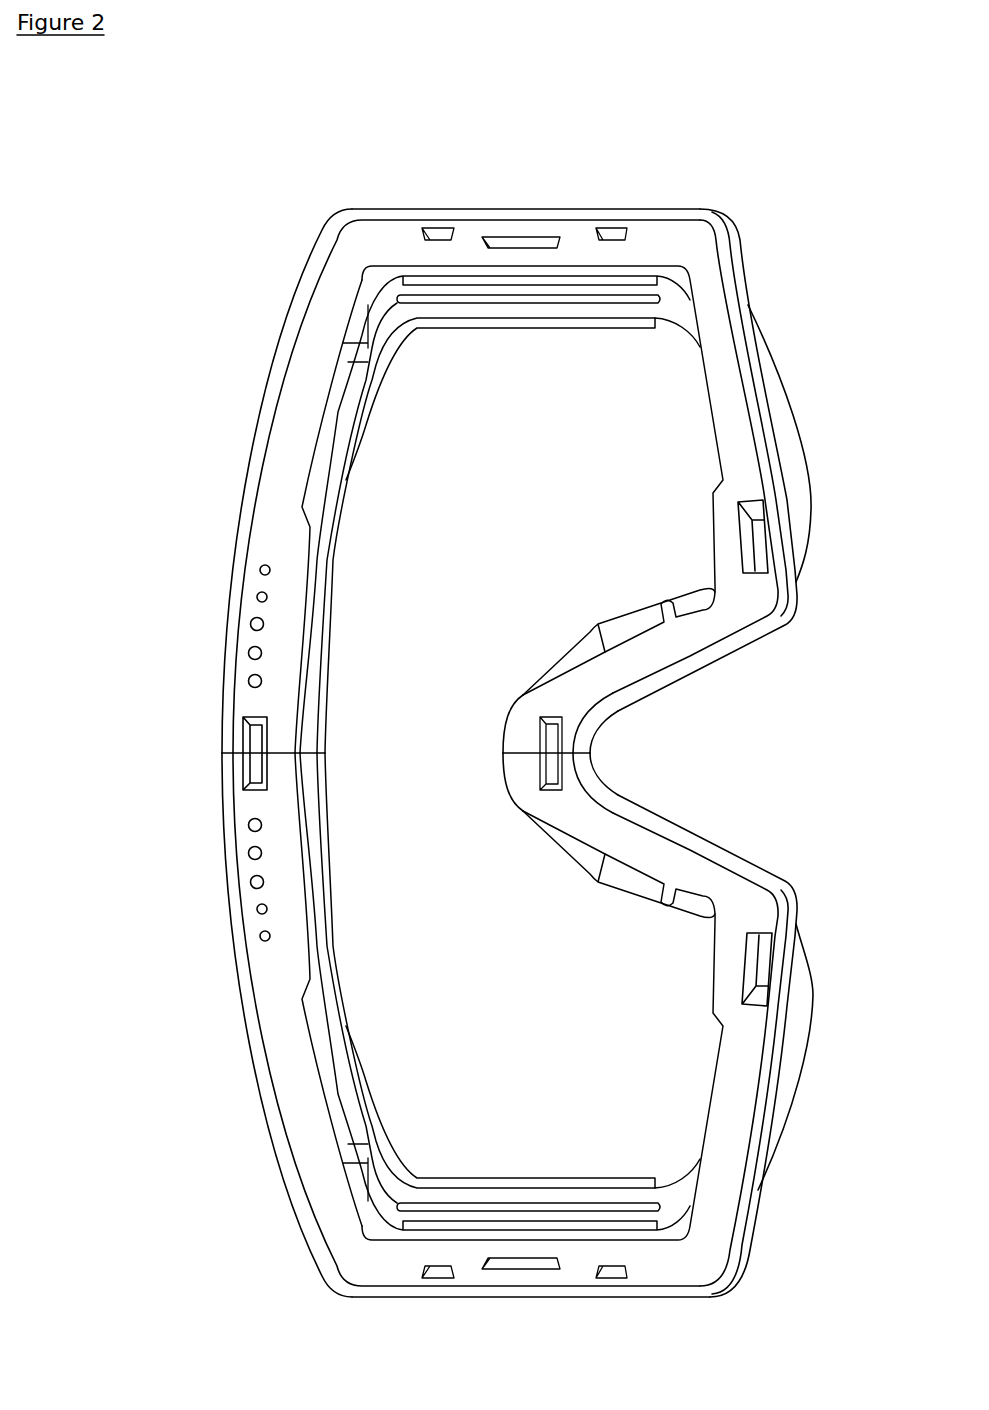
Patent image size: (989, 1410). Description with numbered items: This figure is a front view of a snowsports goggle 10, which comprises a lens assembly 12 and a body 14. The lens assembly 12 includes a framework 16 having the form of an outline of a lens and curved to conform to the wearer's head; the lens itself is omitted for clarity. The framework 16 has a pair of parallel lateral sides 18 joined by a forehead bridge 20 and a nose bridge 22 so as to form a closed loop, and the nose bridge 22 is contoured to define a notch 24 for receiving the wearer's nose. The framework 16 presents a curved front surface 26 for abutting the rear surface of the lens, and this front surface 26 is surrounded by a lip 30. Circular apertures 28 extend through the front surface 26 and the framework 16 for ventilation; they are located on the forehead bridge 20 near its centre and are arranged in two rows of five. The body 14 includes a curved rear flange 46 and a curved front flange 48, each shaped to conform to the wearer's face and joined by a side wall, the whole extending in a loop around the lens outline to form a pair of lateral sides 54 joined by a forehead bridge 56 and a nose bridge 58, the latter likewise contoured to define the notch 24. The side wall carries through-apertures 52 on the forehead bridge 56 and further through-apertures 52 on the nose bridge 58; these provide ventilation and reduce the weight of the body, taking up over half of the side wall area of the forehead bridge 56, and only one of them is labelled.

The goggle 10 is at (222, 290).
The lens assembly 12 is at (730, 200).
The body 14 is at (803, 1090).
The framework 16 is at (750, 265).
The lateral sides 18 is at (515, 205).
The forehead bridge 20 is at (220, 665).
The nose bridge 22 is at (793, 890).
The notch 24 is at (649, 775).
The front surface 26 is at (288, 1092).
The apertures 28 is at (258, 565).
The lip 30 is at (239, 990).
The rear flange 46 is at (531, 1185).
The front flange 48 is at (585, 1220).
The through-apertures 52 is at (368, 352).
The lateral sides 54 is at (532, 330).
The forehead bridge 56 is at (327, 722).
The nose bridge 58 is at (615, 607).